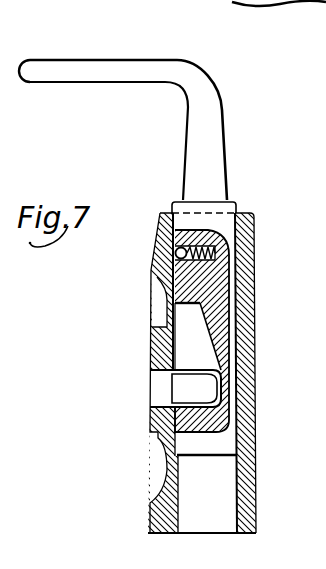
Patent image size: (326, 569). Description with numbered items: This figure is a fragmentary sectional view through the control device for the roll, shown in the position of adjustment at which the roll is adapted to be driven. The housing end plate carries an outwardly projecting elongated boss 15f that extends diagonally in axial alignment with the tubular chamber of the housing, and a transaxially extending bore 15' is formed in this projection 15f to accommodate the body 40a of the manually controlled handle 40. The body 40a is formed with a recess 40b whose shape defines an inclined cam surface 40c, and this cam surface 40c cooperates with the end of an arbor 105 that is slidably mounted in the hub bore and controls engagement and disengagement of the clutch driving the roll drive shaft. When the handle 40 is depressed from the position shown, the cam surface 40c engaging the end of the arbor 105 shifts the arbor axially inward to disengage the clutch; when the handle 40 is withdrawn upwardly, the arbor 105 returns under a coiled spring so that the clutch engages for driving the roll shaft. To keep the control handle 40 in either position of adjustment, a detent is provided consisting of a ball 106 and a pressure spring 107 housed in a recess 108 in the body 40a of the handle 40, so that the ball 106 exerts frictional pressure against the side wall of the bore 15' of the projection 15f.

The manually controlled handle 40 is at (175, 68).
The body of the handle 40a is at (219, 323).
The recess 40b is at (190, 355).
The inclined cam surface 40c is at (200, 337).
The arbor 105 is at (163, 390).
The ball 106 is at (176, 254).
The pressure spring 107 is at (212, 229).
The recess 108 is at (196, 233).
The transaxially extending bore 15' is at (231, 373).
The outwardly projecting elongated boss 15f is at (247, 430).